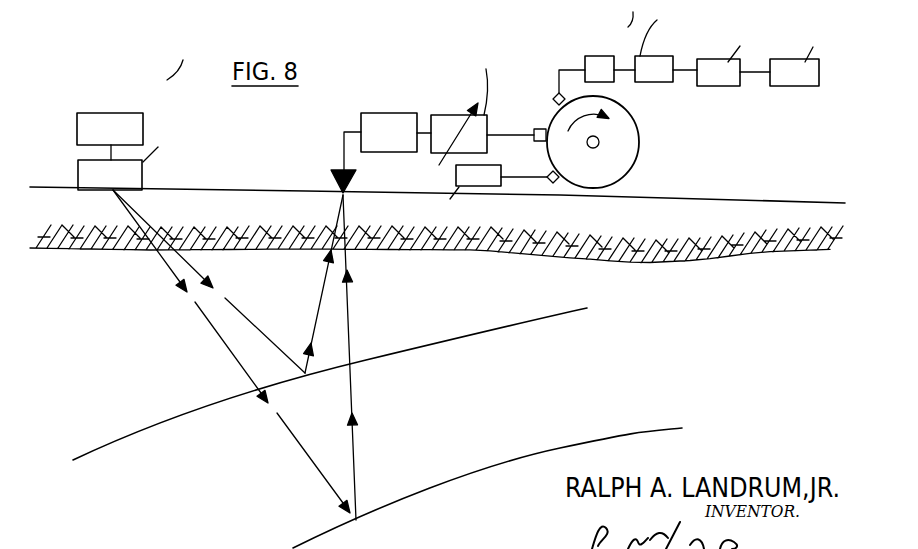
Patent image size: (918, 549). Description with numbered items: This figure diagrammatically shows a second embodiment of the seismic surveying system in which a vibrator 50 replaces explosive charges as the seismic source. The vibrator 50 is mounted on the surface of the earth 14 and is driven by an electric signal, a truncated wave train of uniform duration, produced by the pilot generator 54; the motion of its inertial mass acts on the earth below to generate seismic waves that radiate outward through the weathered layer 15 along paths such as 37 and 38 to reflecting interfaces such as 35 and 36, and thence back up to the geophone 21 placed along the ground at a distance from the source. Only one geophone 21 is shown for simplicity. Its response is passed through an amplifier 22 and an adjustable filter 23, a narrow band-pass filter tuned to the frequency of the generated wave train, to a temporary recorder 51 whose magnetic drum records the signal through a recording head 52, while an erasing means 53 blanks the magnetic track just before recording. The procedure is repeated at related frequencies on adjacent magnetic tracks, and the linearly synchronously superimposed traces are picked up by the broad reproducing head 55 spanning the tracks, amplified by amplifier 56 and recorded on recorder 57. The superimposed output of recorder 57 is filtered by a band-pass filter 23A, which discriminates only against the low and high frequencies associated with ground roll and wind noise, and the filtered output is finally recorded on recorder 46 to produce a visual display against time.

The surface of the earth 14 is at (212, 190).
The pilot generator 54 is at (100, 113).
The vibrator 50 is at (143, 166).
The geophone 21 is at (357, 179).
The amplifier 22 is at (371, 113).
The adjustable filter 23 is at (436, 115).
The recording head 52 is at (535, 131).
The erasing means 53 is at (490, 166).
The broad reproducing head 55 is at (556, 95).
The temporary recorder 51 is at (646, 159).
The amplifier 56 is at (590, 56).
The recorder 57 is at (647, 56).
The band-pass filter 23A is at (713, 86).
The recorder 46 is at (793, 87).
The weathered layer 15 is at (375, 251).
The seismic wave path 37 is at (226, 298).
The seismic wave path 38 is at (222, 340).
The reflecting interface 35 is at (150, 422).
The reflecting interface 36 is at (300, 543).